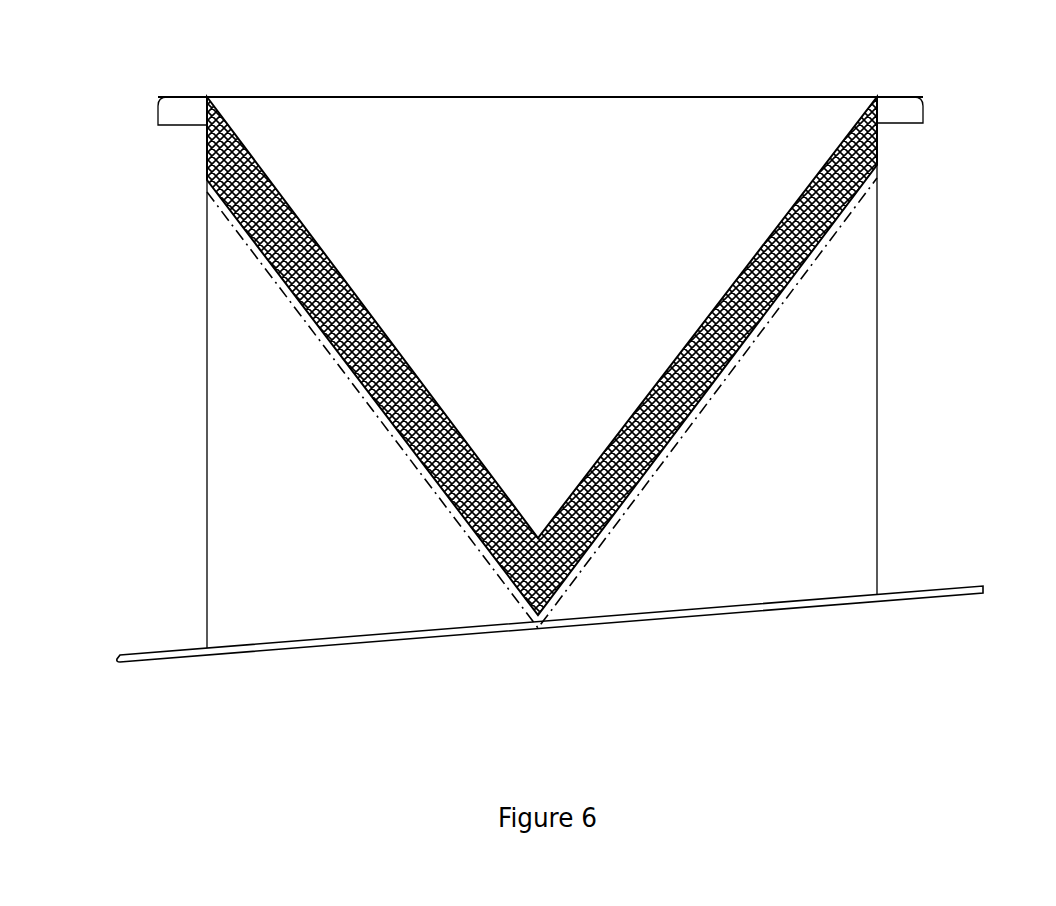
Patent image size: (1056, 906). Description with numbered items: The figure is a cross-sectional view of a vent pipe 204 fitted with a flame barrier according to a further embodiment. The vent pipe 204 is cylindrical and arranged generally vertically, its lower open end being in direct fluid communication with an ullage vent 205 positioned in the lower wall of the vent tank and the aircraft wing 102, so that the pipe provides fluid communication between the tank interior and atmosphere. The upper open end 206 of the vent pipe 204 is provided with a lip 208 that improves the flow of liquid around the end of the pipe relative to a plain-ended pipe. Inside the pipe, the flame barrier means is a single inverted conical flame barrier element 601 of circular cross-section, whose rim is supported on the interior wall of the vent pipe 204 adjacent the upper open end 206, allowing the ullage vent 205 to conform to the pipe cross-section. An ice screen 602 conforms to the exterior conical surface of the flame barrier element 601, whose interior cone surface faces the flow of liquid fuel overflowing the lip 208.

The aircraft wing 102 is at (135, 653).
The vent pipe 204 is at (212, 402).
The ullage vent 205 is at (822, 607).
The upper open end 206 is at (825, 98).
The lip 208 is at (168, 122).
The inverted conical flame barrier element 601 is at (408, 365).
The ice screen 602 is at (428, 482).